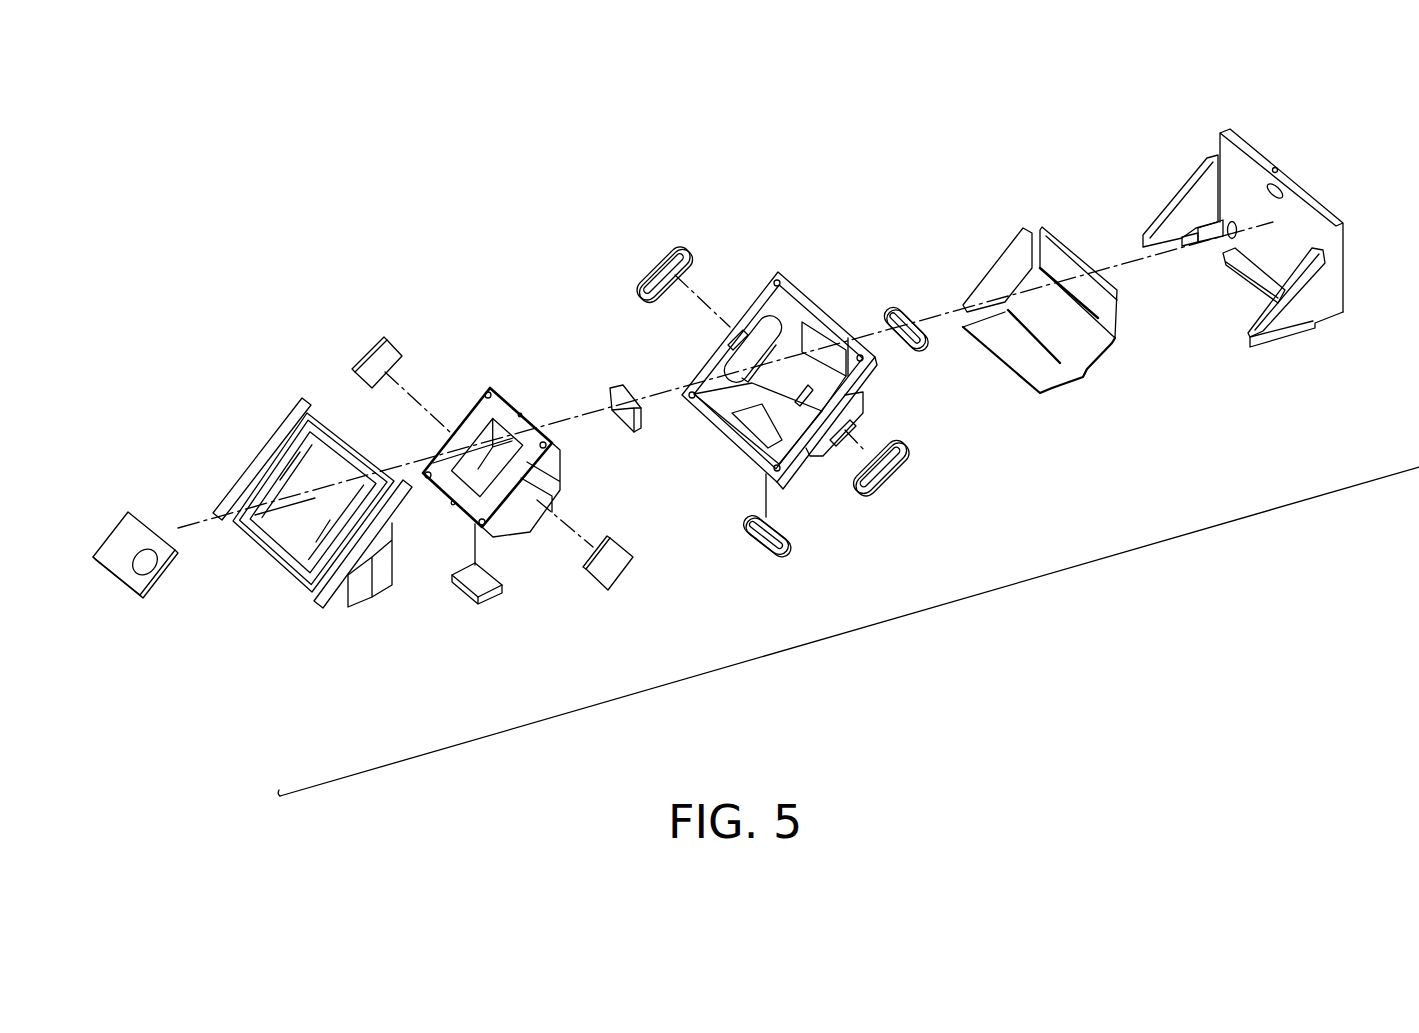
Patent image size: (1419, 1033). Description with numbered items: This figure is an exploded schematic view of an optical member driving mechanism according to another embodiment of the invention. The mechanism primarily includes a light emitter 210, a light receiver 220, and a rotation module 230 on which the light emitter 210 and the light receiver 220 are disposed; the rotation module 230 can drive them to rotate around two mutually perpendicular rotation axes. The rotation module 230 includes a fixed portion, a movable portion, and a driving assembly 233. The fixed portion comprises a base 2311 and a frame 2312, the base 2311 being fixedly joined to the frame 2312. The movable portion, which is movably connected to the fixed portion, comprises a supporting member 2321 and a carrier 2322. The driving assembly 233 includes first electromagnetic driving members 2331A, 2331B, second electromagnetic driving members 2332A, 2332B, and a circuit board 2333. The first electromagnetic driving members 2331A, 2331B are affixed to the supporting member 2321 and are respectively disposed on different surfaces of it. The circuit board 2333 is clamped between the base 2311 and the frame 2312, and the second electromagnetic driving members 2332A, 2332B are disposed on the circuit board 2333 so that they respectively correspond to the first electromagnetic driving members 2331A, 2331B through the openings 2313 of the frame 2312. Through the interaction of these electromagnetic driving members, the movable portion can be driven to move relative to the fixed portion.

The light emitter 210 is at (120, 532).
The light receiver 220 is at (130, 583).
The rotation module 230 is at (865, 632).
The driving assembly 233 is at (180, 58).
The base 2311 is at (1333, 313).
The frame 2312 is at (720, 440).
The openings 2313 is at (812, 343).
The supporting member 2321 is at (463, 413).
The carrier 2322 is at (378, 575).
The first electromagnetic driving member 2331A is at (613, 388).
The first electromagnetic driving member 2331B is at (365, 340).
The second electromagnetic driving member 2332A is at (900, 310).
The second electromagnetic driving member 2332B is at (673, 243).
The circuit board 2333 is at (1098, 355).